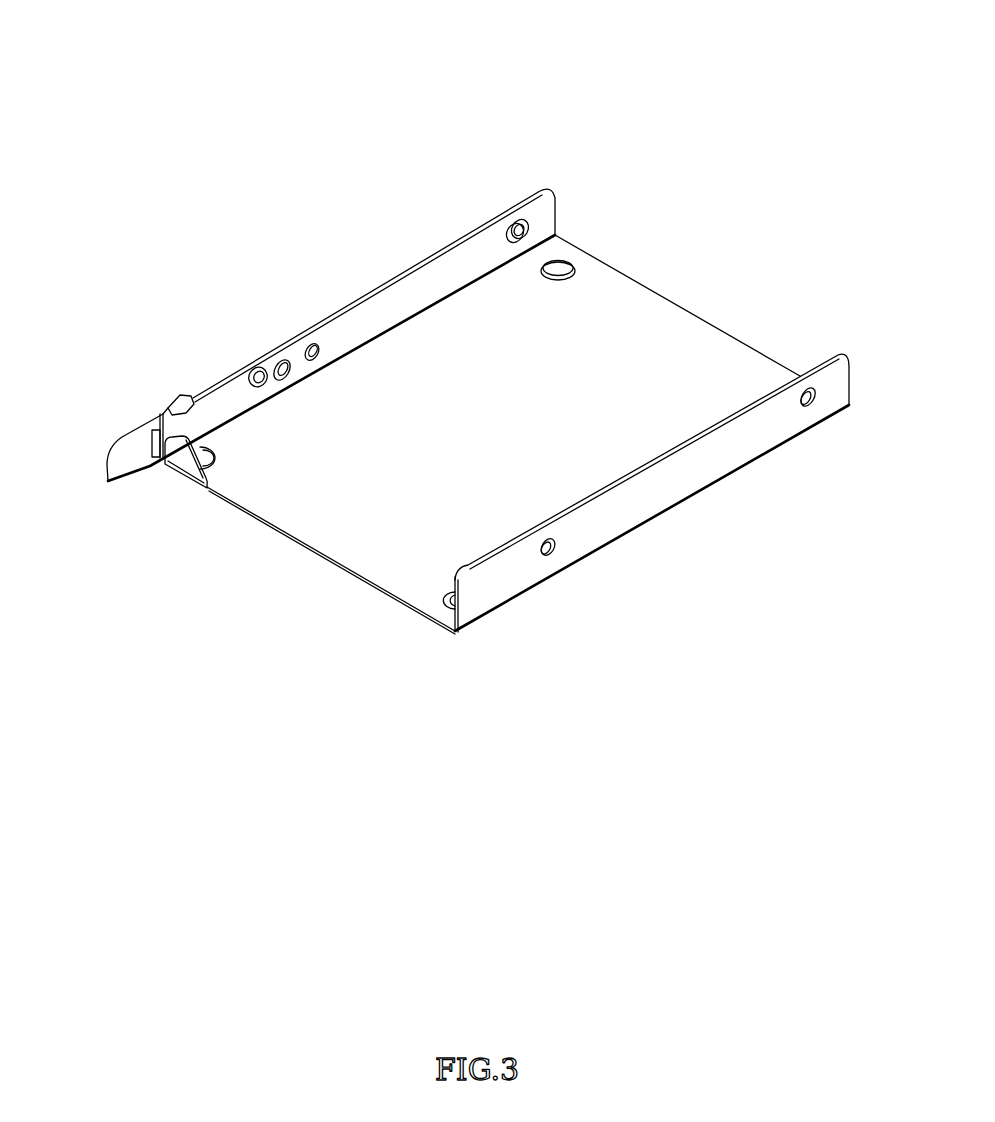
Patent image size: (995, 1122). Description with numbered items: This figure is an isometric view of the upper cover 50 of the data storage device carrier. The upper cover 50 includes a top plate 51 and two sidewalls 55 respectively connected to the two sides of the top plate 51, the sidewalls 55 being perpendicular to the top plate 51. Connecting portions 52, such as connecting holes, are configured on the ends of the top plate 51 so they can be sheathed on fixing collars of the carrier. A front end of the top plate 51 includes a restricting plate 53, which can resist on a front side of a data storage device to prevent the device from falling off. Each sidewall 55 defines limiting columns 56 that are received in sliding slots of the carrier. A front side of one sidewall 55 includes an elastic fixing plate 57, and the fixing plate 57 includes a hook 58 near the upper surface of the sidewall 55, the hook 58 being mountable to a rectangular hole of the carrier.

The upper cover 50 is at (446, 329).
The top plate 51 is at (652, 300).
The connecting portion 52 is at (572, 263).
The restricting plate 53 is at (190, 465).
The sidewall 55 is at (397, 293).
The limiting column 56 is at (522, 222).
The elastic fixing plate 57 is at (133, 450).
The hook 58 is at (176, 398).